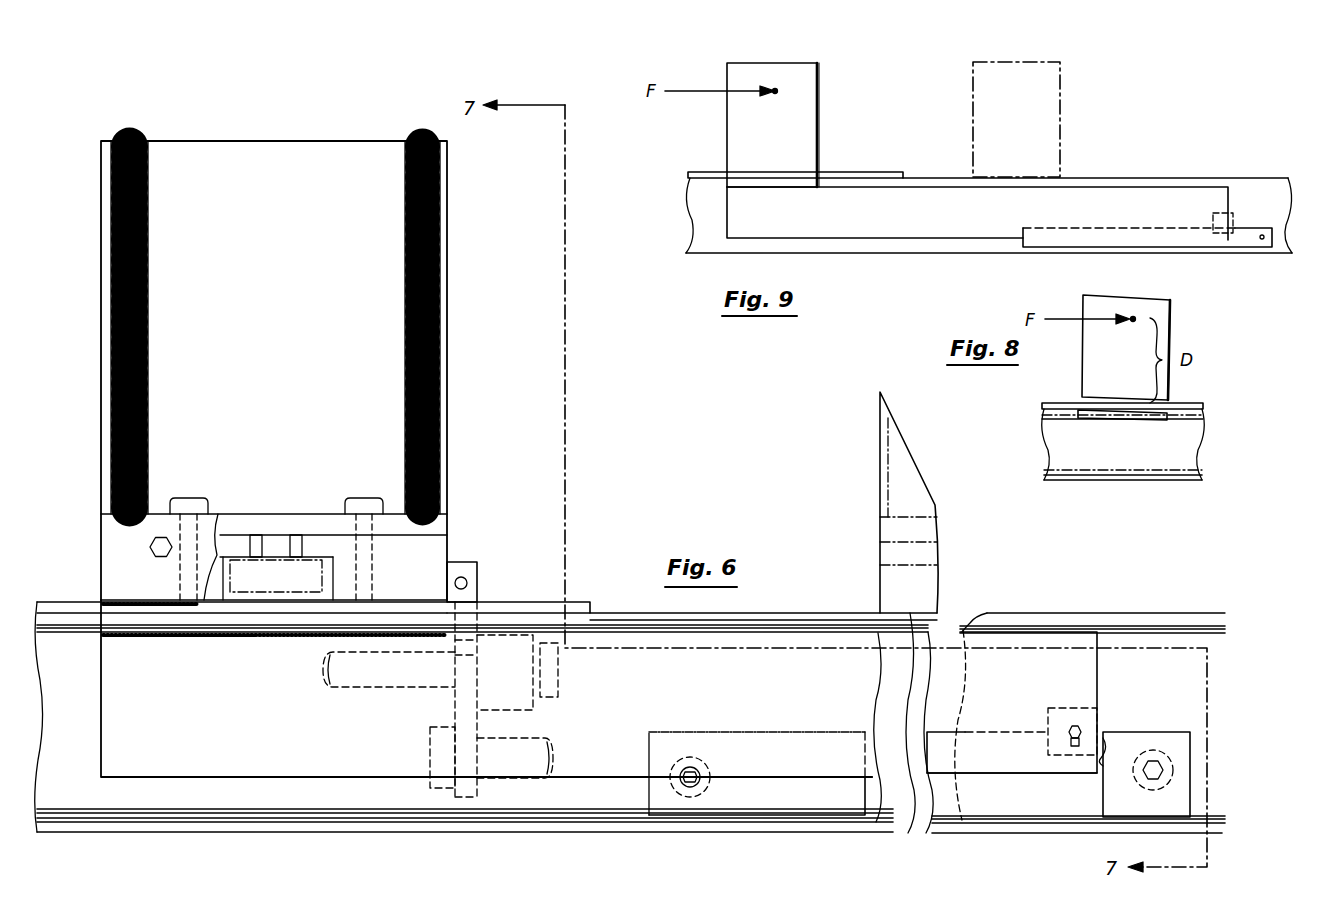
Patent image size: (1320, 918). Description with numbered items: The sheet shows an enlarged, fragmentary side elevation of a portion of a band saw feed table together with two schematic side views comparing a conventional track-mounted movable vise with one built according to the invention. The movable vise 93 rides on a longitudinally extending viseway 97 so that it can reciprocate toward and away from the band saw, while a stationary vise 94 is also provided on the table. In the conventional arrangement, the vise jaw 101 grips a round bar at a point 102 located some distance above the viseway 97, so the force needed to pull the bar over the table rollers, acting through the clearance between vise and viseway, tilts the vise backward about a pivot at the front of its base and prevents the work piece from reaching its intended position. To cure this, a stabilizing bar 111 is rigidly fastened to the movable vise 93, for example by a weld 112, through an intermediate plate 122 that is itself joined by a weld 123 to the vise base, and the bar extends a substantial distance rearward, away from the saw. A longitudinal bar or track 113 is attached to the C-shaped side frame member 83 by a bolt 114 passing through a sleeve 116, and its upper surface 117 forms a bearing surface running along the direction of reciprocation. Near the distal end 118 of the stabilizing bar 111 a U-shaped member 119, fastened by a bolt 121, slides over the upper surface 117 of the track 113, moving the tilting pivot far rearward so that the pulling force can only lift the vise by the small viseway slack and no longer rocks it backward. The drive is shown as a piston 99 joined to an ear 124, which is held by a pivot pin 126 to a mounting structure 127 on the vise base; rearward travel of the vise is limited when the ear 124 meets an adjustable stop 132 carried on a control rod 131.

In FIG. 6, the C-shaped side frame member 83 is at (56, 620).
In FIG. 9, the C-shaped side frame member 83 is at (708, 230).
In FIG. 8, the C-shaped side frame member 83 is at (1085, 482).
In FIG. 6, the movable vise 93 is at (97, 276).
In FIG. 9, the movable vise 93 is at (827, 98).
In FIG. 8, the movable vise 93 is at (1178, 329).
In FIG. 6, the stationary vise 94 is at (878, 462).
In FIG. 9, the stationary vise 94 is at (1062, 103).
In FIG. 6, the viseway 97 is at (85, 600).
In FIG. 9, the viseway 97 is at (882, 170).
In FIG. 8, the viseway 97 is at (1057, 402).
In FIG. 6, the piston 99 is at (530, 738).
In FIG. 6, the vise jaw 101 is at (290, 162).
In FIG. 9, the vise jaw 101 is at (753, 68).
In FIG. 8, the vise jaw 101 is at (1105, 297).
In FIG. 9, the point 102 is at (775, 91).
In FIG. 8, the point 102 is at (1133, 318).
In FIG. 6, the stabilizing bar 111 is at (228, 778).
In FIG. 9, the stabilizing bar 111 is at (826, 225).
In FIG. 6, the weld 112 is at (130, 634).
In FIG. 6, the bar or track 113 is at (790, 803).
In FIG. 9, the bar or track 113 is at (1217, 240).
In FIG. 6, the bolt 114 is at (696, 786).
In FIG. 6, the sleeve 116 is at (690, 757).
In FIG. 6, the upper surface 117 is at (760, 732).
In FIG. 6, the distal end 118 is at (1100, 657).
In FIG. 6, the U-shaped member 119 is at (1100, 762).
In FIG. 9, the U-shaped member 119 is at (1215, 213).
In FIG. 6, the bolt 121 is at (1071, 727).
In FIG. 6, the intermediate plate 122 is at (160, 615).
In FIG. 6, the weld 123 is at (195, 603).
In FIG. 6, the ear 124 is at (452, 712).
In FIG. 6, the pivot pin 126 is at (470, 565).
In FIG. 6, the mounting structure 127 is at (461, 577).
In FIG. 6, the control rod 131 is at (345, 690).
In FIG. 6, the stop 132 is at (533, 712).